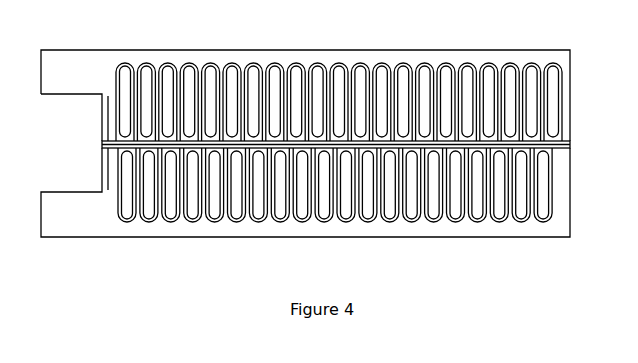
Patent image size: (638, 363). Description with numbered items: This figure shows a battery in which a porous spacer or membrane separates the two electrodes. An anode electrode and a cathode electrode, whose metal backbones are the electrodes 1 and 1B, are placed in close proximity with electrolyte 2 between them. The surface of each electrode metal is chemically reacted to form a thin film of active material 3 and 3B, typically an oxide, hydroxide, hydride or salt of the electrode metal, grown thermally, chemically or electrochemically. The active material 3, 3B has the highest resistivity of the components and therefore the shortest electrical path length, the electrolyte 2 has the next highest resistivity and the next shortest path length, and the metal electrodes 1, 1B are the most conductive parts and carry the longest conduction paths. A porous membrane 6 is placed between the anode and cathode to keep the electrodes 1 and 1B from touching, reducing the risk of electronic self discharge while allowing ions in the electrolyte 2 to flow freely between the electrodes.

The metal 1 is at (329, 60).
The electrode 1B is at (287, 230).
The electrolyte 2 is at (358, 66).
The active material 3 is at (379, 64).
The active material 3B is at (380, 222).
The porous membrane 6 is at (102, 144).